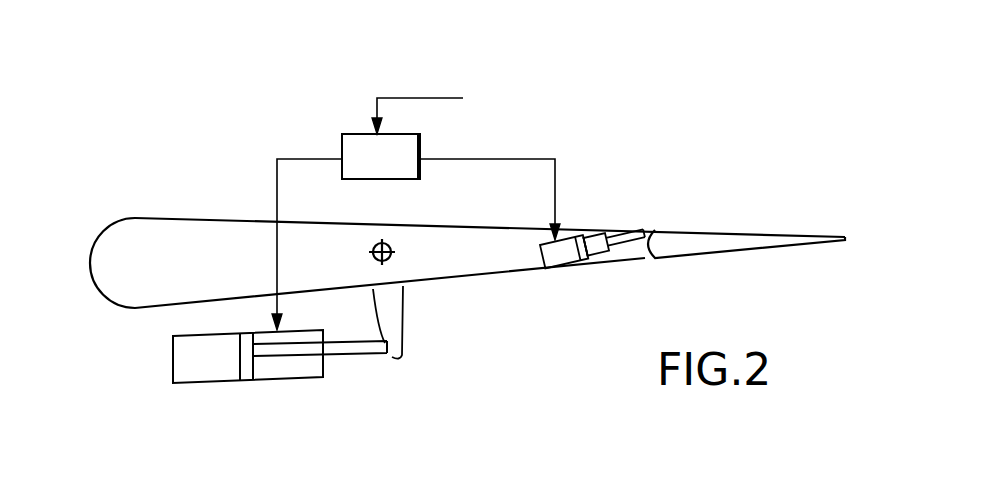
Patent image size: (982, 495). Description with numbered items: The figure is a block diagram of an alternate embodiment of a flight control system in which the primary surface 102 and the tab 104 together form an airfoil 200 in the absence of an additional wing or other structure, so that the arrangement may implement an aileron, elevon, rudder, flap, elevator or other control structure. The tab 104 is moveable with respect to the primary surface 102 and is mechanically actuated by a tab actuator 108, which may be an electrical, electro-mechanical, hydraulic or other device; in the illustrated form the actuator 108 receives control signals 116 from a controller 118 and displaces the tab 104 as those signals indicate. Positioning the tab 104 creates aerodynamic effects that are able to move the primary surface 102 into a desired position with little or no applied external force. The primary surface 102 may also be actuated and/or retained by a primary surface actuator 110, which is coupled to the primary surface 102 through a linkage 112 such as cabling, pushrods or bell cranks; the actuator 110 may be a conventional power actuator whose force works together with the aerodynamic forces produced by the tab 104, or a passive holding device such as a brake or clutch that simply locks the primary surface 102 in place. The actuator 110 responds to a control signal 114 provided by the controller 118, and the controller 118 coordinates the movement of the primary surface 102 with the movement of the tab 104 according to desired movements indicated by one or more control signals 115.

The primary control surface 102 is at (216, 268).
The tab 104 is at (660, 232).
The tab actuator 108 is at (595, 253).
The primary surface actuator 110 is at (173, 358).
The linkage 112 is at (412, 333).
The control signal 114 is at (293, 157).
The control signals 115 is at (396, 97).
The control signals 116 is at (555, 162).
The controller 118 is at (354, 134).
The airfoil 200 is at (727, 112).